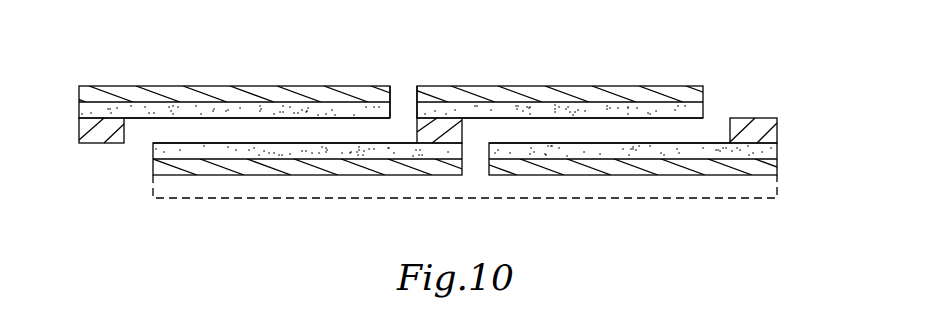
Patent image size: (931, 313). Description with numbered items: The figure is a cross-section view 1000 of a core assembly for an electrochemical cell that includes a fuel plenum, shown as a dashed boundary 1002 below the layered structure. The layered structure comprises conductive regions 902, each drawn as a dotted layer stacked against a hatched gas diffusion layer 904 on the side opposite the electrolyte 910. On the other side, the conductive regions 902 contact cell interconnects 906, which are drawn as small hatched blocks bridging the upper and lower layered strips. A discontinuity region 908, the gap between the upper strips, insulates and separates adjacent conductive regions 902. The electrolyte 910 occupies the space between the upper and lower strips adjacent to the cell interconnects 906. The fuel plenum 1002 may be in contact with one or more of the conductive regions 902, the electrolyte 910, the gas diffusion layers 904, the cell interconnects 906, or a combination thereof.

The conductive region 902 is at (791, 146).
The gas diffusion layer 904 is at (791, 163).
The cell interconnect 906 is at (99, 156).
The discontinuity region 908 is at (400, 92).
The electrolyte 910 is at (307, 131).
The cross-section view 1000 is at (750, 34).
The fuel plenum 1002 is at (440, 197).